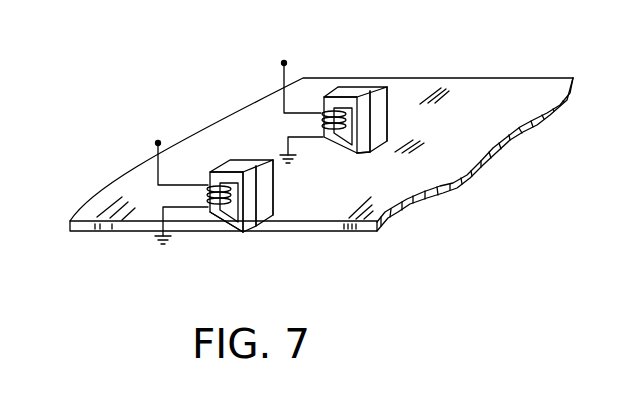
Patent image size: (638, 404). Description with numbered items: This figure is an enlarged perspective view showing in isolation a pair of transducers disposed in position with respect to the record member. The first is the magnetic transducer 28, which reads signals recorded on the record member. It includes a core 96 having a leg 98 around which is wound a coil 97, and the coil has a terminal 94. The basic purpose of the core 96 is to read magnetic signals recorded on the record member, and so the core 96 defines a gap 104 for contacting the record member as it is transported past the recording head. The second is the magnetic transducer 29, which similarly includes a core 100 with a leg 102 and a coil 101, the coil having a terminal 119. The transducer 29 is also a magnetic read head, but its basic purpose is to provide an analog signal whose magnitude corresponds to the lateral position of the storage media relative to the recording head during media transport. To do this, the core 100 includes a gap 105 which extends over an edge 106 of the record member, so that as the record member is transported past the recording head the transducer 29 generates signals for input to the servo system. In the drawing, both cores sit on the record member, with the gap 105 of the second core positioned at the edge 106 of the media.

The magnetic transducer 28 is at (396, 100).
The magnetic transducer 29 is at (279, 198).
The terminal 94 is at (284, 63).
The core 96 is at (382, 123).
The coil 97 is at (322, 120).
The leg 98 is at (328, 102).
The core 100 is at (268, 191).
The coil 101 is at (209, 198).
The leg 102 is at (213, 176).
The gap 104 is at (357, 155).
The gap 105 is at (237, 230).
The edge of the record member 106 is at (370, 217).
The terminal 119 is at (159, 141).